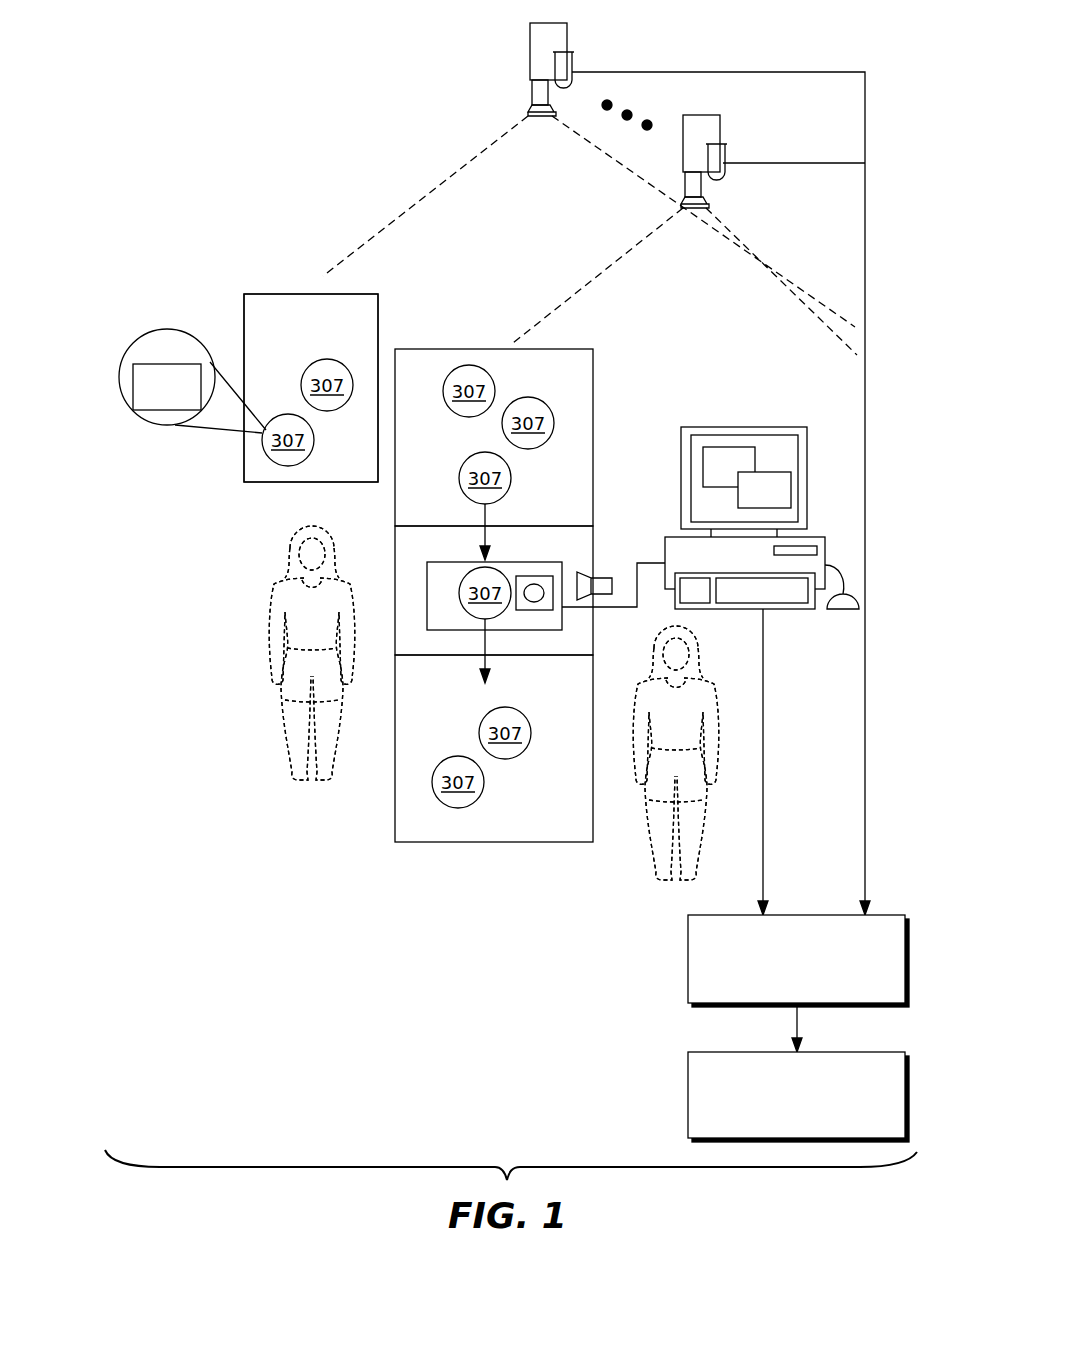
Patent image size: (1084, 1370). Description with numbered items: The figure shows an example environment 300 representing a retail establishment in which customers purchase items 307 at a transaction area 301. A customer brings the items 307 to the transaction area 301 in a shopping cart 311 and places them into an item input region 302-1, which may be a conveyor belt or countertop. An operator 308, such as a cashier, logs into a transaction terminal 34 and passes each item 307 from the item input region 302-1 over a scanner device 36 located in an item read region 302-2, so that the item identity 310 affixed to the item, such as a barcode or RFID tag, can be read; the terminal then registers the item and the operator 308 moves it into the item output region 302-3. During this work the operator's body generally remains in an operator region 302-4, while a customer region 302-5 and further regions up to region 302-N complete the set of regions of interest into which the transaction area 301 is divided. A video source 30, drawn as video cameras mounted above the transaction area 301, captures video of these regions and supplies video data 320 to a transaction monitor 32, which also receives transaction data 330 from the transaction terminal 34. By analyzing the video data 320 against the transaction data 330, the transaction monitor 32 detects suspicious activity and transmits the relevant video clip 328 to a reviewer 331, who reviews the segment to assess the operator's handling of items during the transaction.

The video source 30 is at (530, 52).
The transaction monitor 32 is at (783, 993).
The transaction terminal 34 is at (696, 427).
The scanner device 36 is at (453, 589).
The environment 300 is at (268, 1054).
The transaction area 301 is at (334, 869).
The item input region 302-1 is at (587, 372).
The item read region 302-2 is at (461, 557).
The item output region 302-3 is at (587, 690).
The operator region 302-4 is at (650, 620).
The customer region 302-5 is at (322, 514).
The region 302-N is at (340, 349).
The item 307 is at (150, 356).
The operator 308 is at (295, 636).
The item identity 310 is at (150, 398).
The shopping cart 311 is at (262, 320).
The video data 320 is at (865, 196).
The video clip 328 is at (797, 1018).
The transaction data 330 is at (762, 871).
The reviewer 331 is at (777, 1119).